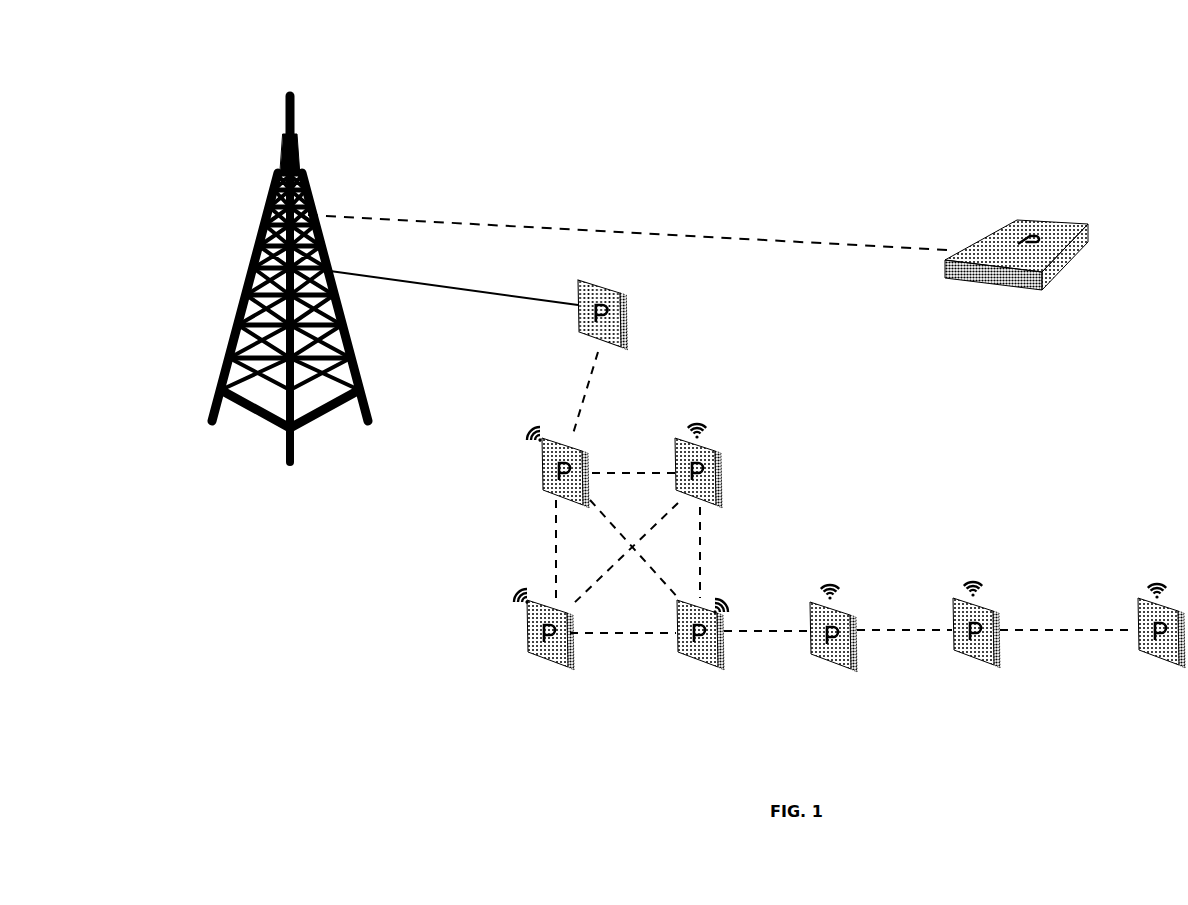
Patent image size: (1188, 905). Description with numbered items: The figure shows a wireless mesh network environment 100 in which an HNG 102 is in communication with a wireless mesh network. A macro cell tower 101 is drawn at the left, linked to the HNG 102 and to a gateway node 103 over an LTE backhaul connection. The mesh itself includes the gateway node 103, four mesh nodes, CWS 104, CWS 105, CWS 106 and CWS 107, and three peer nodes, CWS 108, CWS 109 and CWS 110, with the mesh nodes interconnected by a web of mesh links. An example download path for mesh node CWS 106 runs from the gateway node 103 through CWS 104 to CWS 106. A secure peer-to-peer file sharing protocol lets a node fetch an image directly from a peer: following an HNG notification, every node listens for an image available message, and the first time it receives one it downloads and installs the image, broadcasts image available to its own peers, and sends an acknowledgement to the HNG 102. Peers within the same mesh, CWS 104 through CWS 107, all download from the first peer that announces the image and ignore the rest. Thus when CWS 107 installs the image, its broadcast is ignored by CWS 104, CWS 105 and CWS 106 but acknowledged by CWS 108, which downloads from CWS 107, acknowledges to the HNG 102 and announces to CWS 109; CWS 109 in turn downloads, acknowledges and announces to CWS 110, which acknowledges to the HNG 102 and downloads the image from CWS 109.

The network architecture 100 is at (238, 107).
The macro cell tower 101 is at (314, 193).
The HNG 102 is at (1016, 273).
The gateway node 103 is at (652, 315).
The CWS mesh node 104 is at (546, 466).
The CWS mesh node 105 is at (717, 467).
The CWS mesh node 106 is at (542, 652).
The CWS mesh node 107 is at (704, 657).
The CWS peer node 108 is at (833, 651).
The CWS peer node 109 is at (976, 647).
The CWS peer node 110 is at (1161, 647).